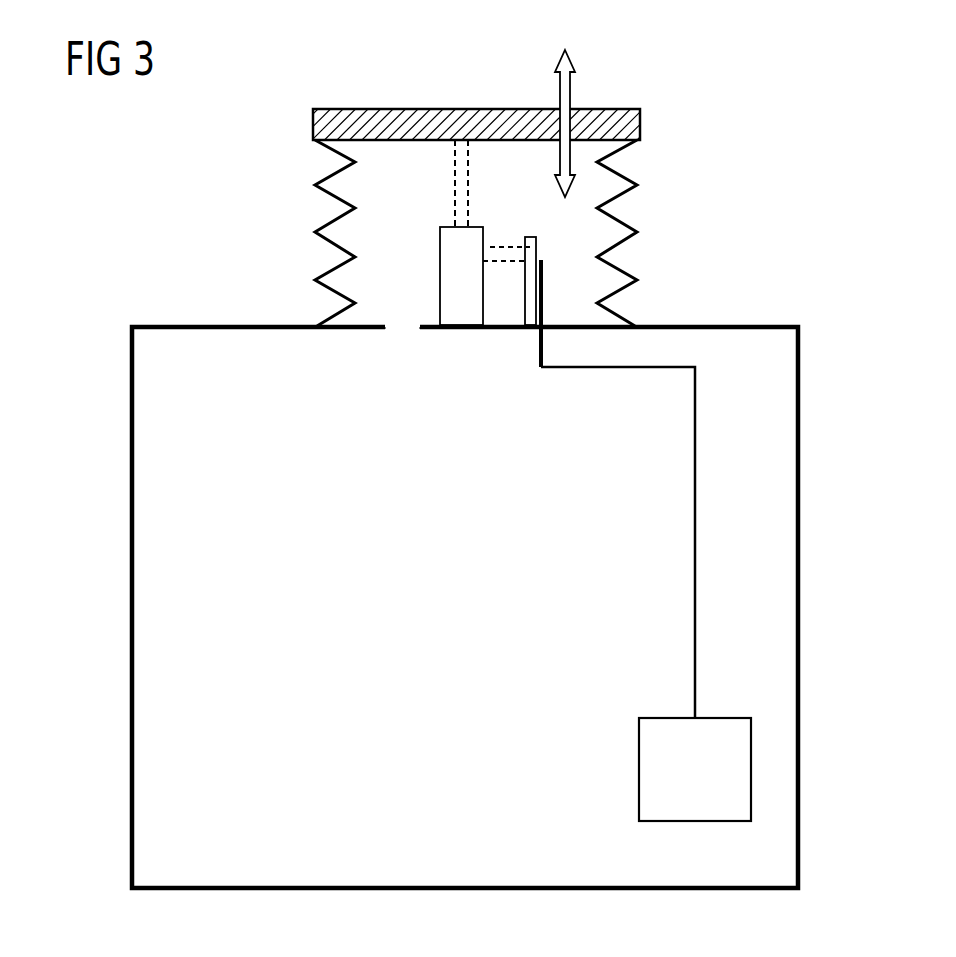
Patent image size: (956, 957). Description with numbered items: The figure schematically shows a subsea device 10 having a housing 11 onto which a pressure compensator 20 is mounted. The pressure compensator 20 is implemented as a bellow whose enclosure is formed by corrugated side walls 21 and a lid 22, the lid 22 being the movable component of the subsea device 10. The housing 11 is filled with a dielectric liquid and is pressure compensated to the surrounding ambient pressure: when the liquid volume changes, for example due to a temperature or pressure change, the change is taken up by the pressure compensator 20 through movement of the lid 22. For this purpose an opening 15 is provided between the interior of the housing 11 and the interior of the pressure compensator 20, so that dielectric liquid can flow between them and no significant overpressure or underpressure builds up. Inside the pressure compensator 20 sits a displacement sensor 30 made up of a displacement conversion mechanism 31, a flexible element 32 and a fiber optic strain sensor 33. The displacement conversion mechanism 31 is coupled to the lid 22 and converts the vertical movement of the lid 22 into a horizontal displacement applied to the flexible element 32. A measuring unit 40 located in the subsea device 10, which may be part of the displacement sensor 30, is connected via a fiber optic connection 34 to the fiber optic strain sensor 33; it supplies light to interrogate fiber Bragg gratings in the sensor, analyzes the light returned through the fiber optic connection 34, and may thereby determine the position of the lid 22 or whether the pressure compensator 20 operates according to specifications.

The subsea device 10 is at (128, 185).
The housing 11 is at (132, 607).
The opening 15 is at (405, 325).
The pressure compensator 20 is at (674, 161).
The corrugated side walls 21 is at (630, 221).
The lid 22 is at (313, 120).
The displacement sensor 30 is at (544, 377).
The displacement conversion mechanism 31 is at (453, 274).
The flexible element 32 is at (530, 247).
The fiber optic strain sensor 33 is at (543, 276).
The fiber optic connection 34 is at (695, 507).
The measuring unit 40 is at (639, 768).